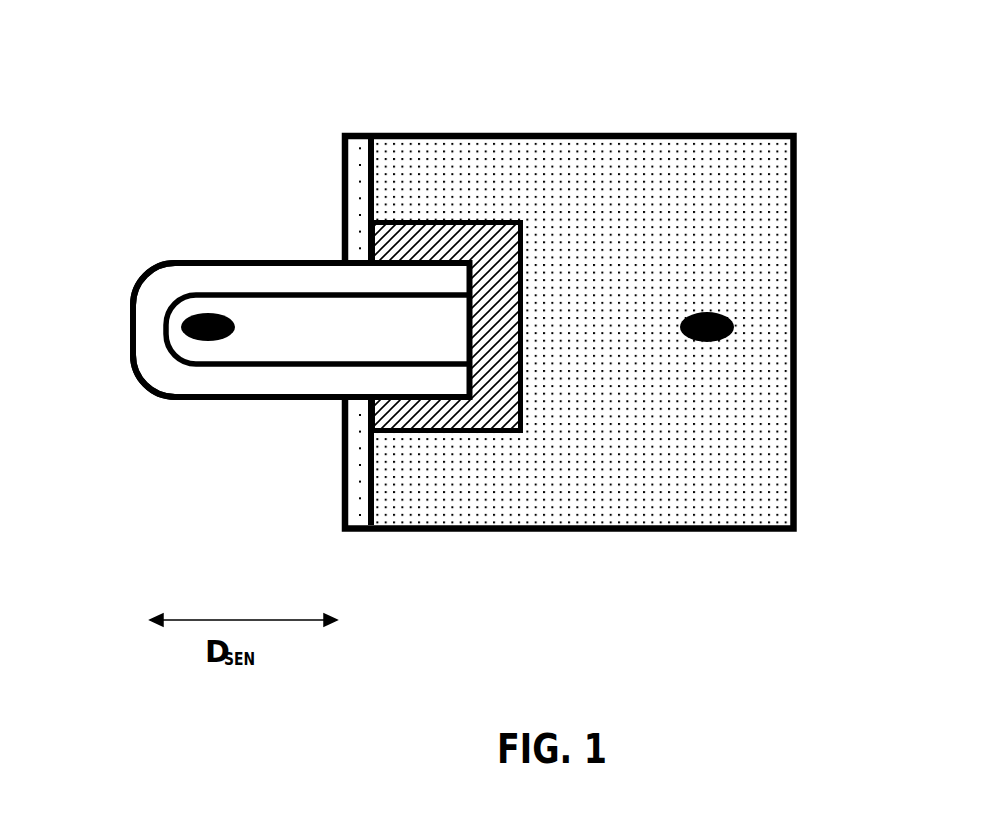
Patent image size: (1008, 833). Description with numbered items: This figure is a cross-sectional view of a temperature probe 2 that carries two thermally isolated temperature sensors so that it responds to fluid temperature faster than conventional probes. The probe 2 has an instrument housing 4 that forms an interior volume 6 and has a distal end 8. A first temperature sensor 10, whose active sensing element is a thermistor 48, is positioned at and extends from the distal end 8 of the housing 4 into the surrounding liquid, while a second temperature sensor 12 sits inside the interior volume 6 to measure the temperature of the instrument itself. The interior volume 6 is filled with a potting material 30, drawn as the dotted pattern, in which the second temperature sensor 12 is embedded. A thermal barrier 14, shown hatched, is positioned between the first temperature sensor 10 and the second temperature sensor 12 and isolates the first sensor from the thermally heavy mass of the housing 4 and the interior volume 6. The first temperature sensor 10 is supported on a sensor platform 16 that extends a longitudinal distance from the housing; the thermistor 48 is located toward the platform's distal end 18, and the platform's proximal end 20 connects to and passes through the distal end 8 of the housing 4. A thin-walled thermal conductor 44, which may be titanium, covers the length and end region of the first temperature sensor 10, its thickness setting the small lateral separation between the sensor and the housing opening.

The temperature probe 2 is at (462, 299).
The instrument housing 4 is at (511, 309).
The interior volume 6 is at (582, 292).
The distal end 8 is at (345, 515).
The first temperature sensor 10 is at (304, 318).
The second temperature sensor 12 is at (722, 326).
The thermal barrier 14 is at (403, 235).
The sensor platform 16 is at (251, 291).
The distal end 18 is at (128, 318).
The proximal end 20 is at (467, 337).
The potting material 30 is at (700, 220).
The thin-walled thermal conductor 44 is at (268, 383).
The thermistor 48 is at (217, 333).